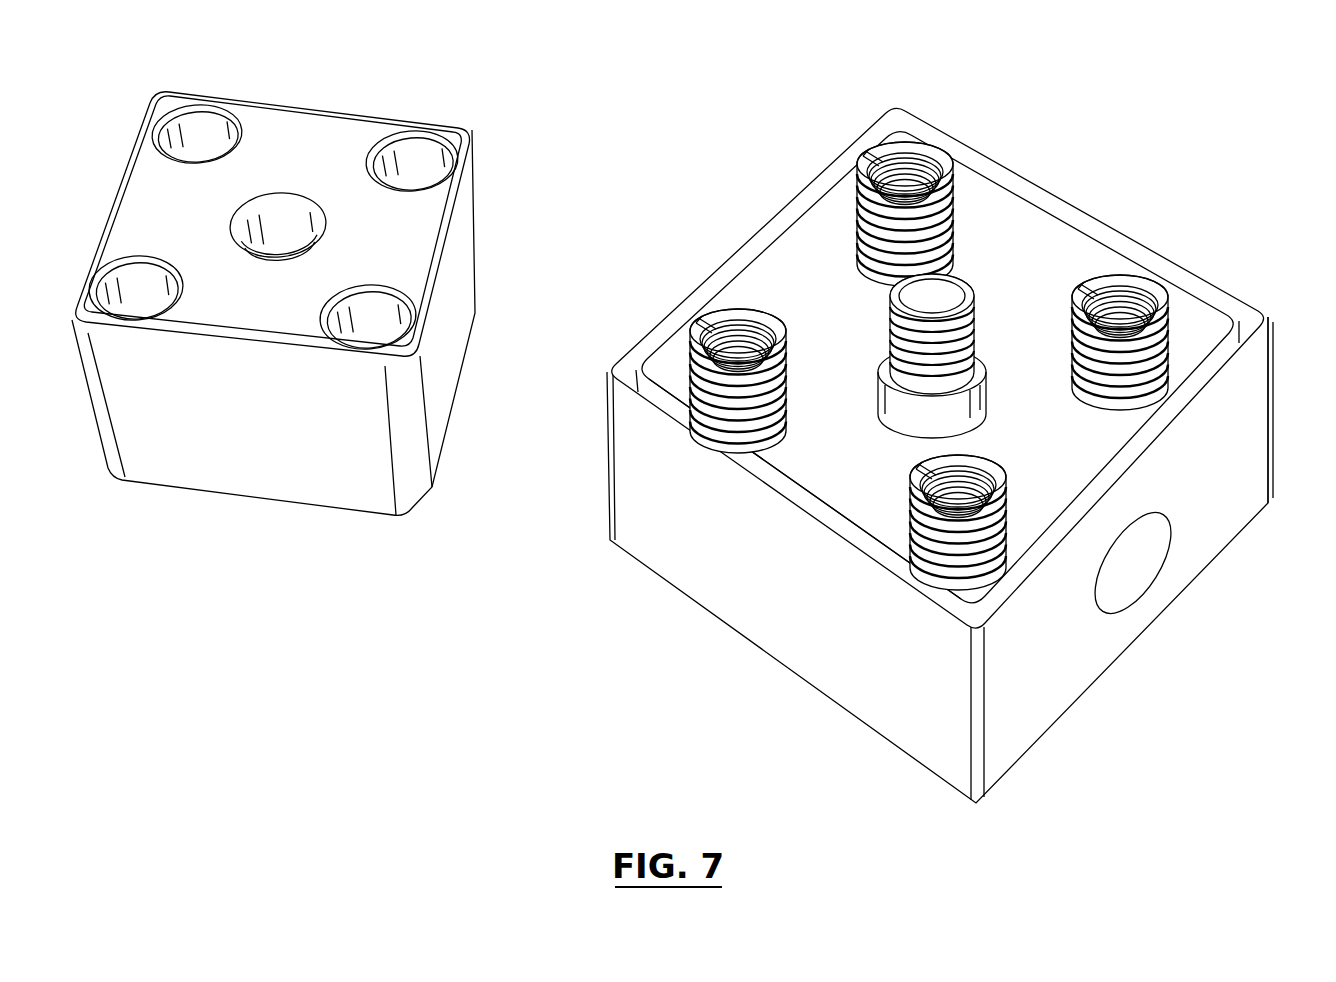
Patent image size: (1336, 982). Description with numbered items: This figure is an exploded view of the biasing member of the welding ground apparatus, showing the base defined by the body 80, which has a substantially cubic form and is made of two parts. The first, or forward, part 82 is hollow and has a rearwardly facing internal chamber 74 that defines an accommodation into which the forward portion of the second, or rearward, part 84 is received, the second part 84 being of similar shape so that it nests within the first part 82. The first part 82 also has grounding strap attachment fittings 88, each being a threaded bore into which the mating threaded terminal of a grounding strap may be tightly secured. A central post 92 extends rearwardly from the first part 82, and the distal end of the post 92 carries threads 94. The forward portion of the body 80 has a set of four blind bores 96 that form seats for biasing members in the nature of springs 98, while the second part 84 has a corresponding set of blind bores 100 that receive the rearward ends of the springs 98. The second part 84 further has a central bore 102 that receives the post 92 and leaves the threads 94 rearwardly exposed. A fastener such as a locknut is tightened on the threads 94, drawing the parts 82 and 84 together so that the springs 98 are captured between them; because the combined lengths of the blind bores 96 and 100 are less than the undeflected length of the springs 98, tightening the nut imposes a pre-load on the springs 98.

The internal chamber 74 is at (800, 268).
The body 80 is at (1168, 126).
The first part 82 is at (1062, 273).
The second part 84 is at (427, 204).
The grounding strap attachment fitting 88 is at (1135, 574).
The central post 92 is at (887, 392).
The threads 94 is at (945, 300).
The blind bores 96 is at (958, 256).
The springs 98 is at (912, 158).
The blind bores 100 is at (405, 173).
The central bore 102 is at (286, 220).